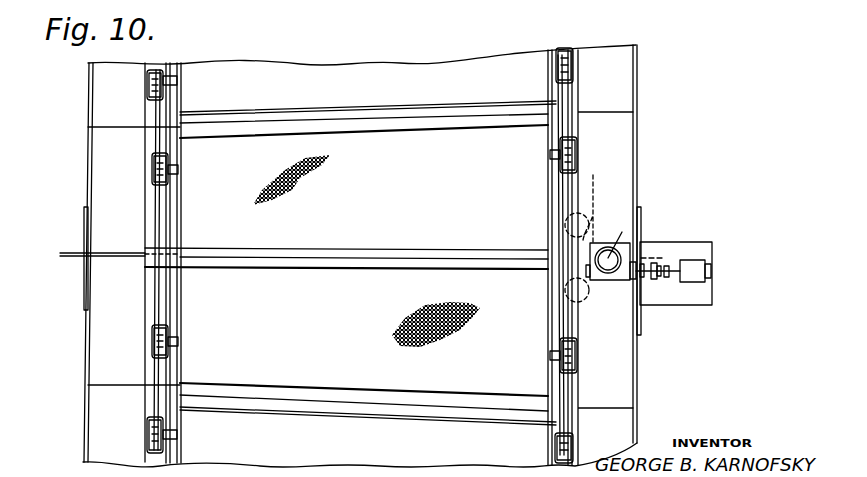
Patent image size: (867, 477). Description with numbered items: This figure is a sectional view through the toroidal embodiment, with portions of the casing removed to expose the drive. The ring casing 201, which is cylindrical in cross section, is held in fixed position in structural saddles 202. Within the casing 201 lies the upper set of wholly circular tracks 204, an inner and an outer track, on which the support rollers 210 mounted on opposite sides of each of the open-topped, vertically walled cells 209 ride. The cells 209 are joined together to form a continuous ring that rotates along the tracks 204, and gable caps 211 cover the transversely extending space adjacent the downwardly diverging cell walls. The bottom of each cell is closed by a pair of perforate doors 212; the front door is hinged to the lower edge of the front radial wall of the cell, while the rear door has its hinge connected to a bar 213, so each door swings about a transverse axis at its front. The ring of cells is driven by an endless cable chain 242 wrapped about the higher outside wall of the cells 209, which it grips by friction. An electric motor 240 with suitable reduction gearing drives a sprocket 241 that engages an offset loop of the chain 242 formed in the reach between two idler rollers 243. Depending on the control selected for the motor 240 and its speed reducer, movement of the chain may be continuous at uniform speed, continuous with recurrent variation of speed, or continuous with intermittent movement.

The ring casing 201 is at (88, 98).
The structural saddles 202 is at (67, 258).
The upper set of wholly circular tracks 204 is at (160, 292).
The cells 209 is at (182, 322).
The support rollers 210 is at (151, 163).
The gable caps 211 is at (411, 122).
The perforate doors 212 is at (318, 184).
The bar 213 is at (376, 266).
The electric motor 240 is at (712, 272).
The sprocket 241 is at (628, 222).
The chain 242 is at (593, 206).
The idler rollers 243 is at (589, 208).